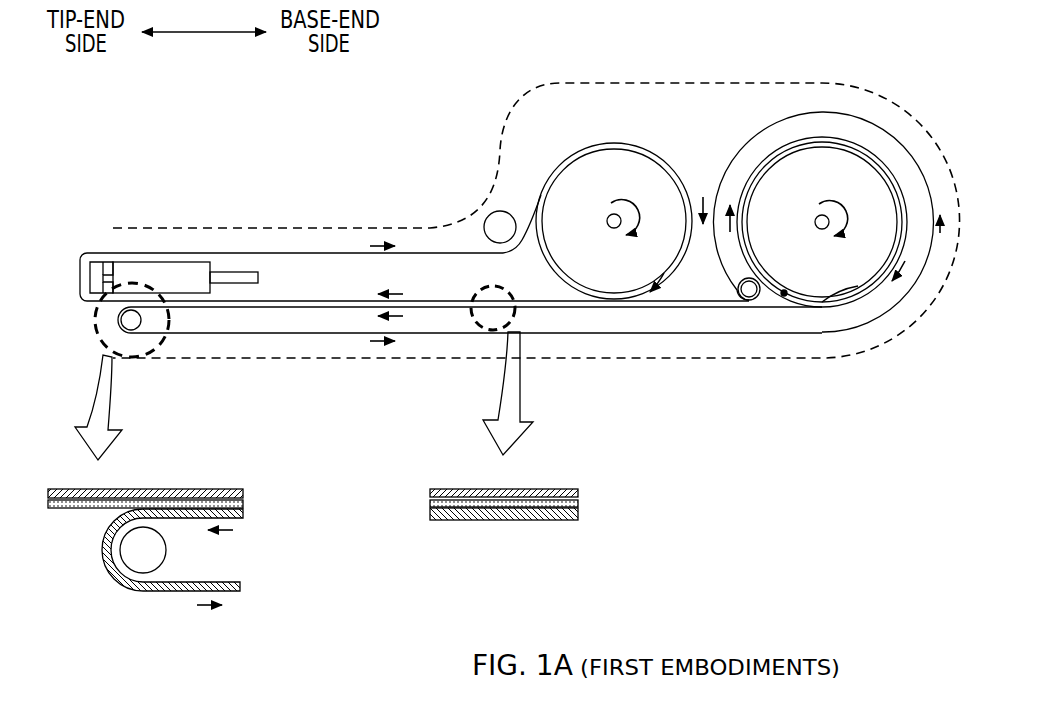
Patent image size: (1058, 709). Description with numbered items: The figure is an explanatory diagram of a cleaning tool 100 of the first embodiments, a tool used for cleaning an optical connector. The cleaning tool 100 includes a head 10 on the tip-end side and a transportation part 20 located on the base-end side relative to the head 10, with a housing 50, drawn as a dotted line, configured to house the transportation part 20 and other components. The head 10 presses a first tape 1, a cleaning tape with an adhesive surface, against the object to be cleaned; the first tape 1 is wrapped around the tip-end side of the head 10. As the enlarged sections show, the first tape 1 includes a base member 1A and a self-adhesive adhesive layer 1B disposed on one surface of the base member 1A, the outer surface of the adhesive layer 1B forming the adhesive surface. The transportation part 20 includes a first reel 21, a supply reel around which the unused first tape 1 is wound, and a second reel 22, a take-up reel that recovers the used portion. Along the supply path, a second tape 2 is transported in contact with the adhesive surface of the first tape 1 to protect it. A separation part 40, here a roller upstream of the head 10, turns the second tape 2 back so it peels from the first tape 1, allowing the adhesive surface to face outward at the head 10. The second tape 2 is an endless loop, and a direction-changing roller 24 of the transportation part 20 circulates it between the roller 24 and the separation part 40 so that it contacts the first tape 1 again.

The first tape 1 is at (77, 276).
The base member 1A is at (243, 495).
The adhesive layer 1B is at (243, 503).
The second tape 2 is at (330, 328).
The head 10 is at (97, 267).
The transportation part 20 is at (772, 225).
The first reel 21 is at (860, 170).
The second reel 22 is at (612, 160).
The roller 24 is at (749, 289).
The separation part 40 is at (121, 320).
The housing 50 is at (525, 95).
The cleaning tool 100 is at (236, 140).